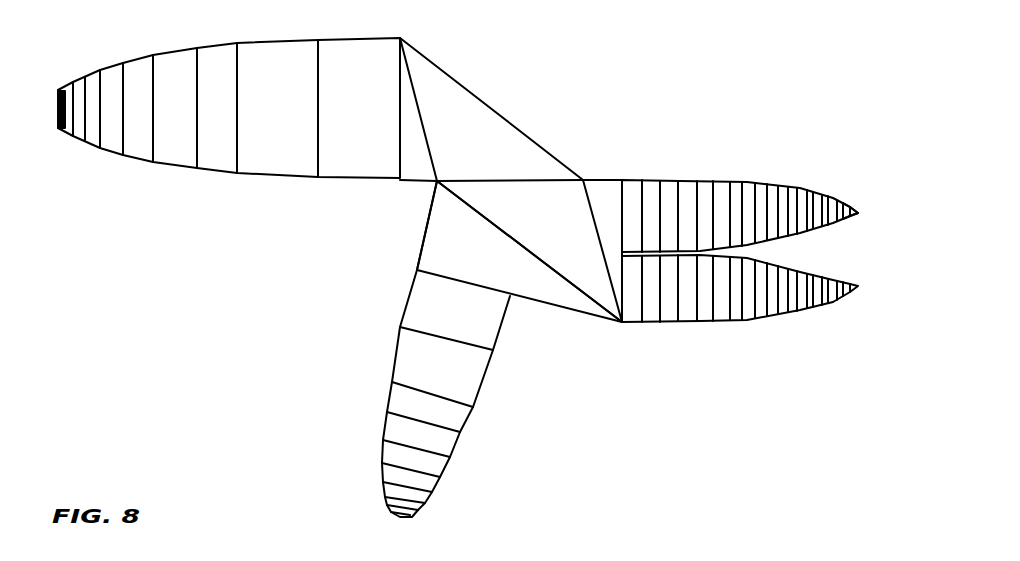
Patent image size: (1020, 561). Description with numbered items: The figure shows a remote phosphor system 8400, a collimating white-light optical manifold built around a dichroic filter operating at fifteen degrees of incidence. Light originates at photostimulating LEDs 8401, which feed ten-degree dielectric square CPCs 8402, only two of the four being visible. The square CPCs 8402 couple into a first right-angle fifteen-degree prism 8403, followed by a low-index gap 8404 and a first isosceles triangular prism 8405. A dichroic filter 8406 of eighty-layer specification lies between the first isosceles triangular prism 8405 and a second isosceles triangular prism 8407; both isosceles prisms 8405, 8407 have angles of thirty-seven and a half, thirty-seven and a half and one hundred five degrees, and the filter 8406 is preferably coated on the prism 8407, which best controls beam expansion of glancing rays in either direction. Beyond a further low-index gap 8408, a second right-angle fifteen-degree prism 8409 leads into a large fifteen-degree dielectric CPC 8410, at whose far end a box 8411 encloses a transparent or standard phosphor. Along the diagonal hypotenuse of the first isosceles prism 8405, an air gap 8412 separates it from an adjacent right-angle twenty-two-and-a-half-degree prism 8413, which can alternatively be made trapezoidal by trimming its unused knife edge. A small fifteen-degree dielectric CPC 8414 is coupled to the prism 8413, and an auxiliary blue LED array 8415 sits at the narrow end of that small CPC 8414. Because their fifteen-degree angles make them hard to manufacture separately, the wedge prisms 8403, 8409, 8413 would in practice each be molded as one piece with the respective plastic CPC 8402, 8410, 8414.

The remote phosphor system 8400 is at (752, 82).
The photostimulating LEDs 8401 is at (864, 208).
The dielectric square CPCs 8402 is at (737, 196).
The first right-angle prism 8403 is at (612, 175).
The low-index gap 8404 is at (604, 270).
The first isosceles triangular prism 8405 is at (548, 230).
The dichroic filter 8406 is at (525, 170).
The second isosceles triangular prism 8407 is at (487, 98).
The low-index gap 8408 is at (425, 107).
The second right-angle prism 8409 is at (413, 184).
The large dielectric CPC 8410 is at (278, 186).
The box 8411 is at (62, 131).
The air gap 8412 is at (477, 220).
The right-angle prism 8413 is at (410, 253).
The small dielectric CPC 8414 is at (383, 357).
The auxiliary blue LED array 8415 is at (388, 510).